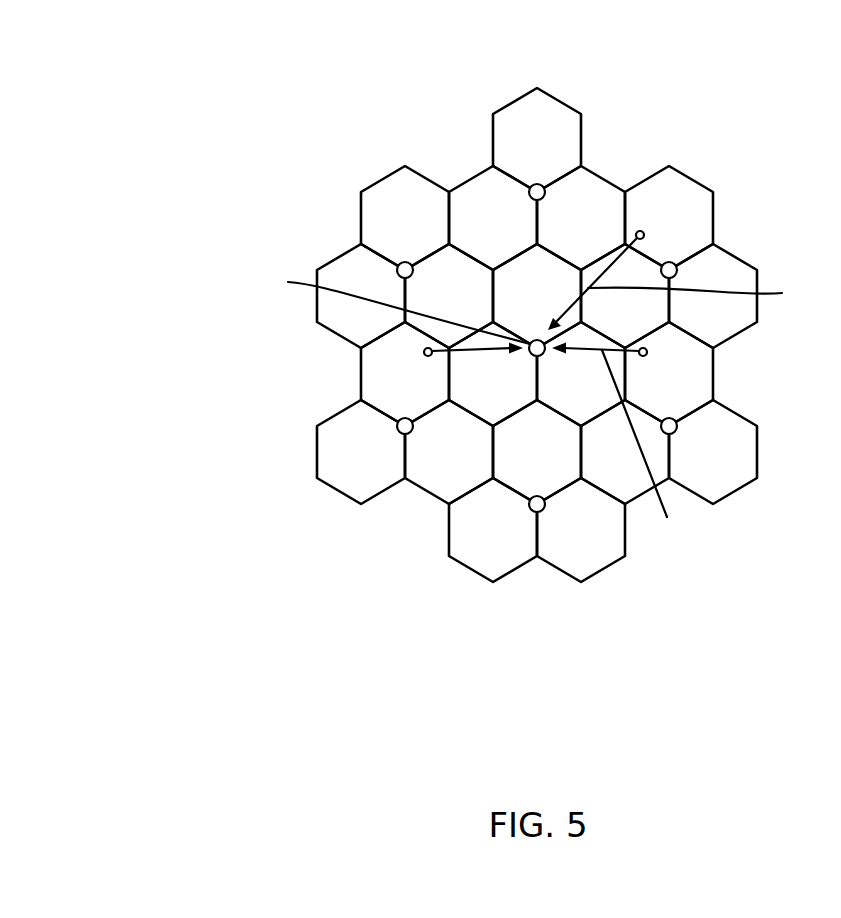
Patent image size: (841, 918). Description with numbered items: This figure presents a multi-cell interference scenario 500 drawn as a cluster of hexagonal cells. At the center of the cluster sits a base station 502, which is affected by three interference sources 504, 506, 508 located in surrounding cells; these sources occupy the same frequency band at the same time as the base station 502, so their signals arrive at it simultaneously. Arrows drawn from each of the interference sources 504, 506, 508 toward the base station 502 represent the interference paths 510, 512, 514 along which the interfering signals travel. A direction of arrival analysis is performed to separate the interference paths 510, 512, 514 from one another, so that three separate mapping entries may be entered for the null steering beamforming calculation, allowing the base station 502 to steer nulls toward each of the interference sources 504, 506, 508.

The multi-cell interference scenario 500 is at (128, 48).
The base station 502 is at (533, 341).
The interference source 504 is at (424, 352).
The interference source 506 is at (644, 233).
The interference source 508 is at (647, 352).
The interference path 510 is at (389, 306).
The interference path 512 is at (704, 294).
The interference path 514 is at (651, 447).